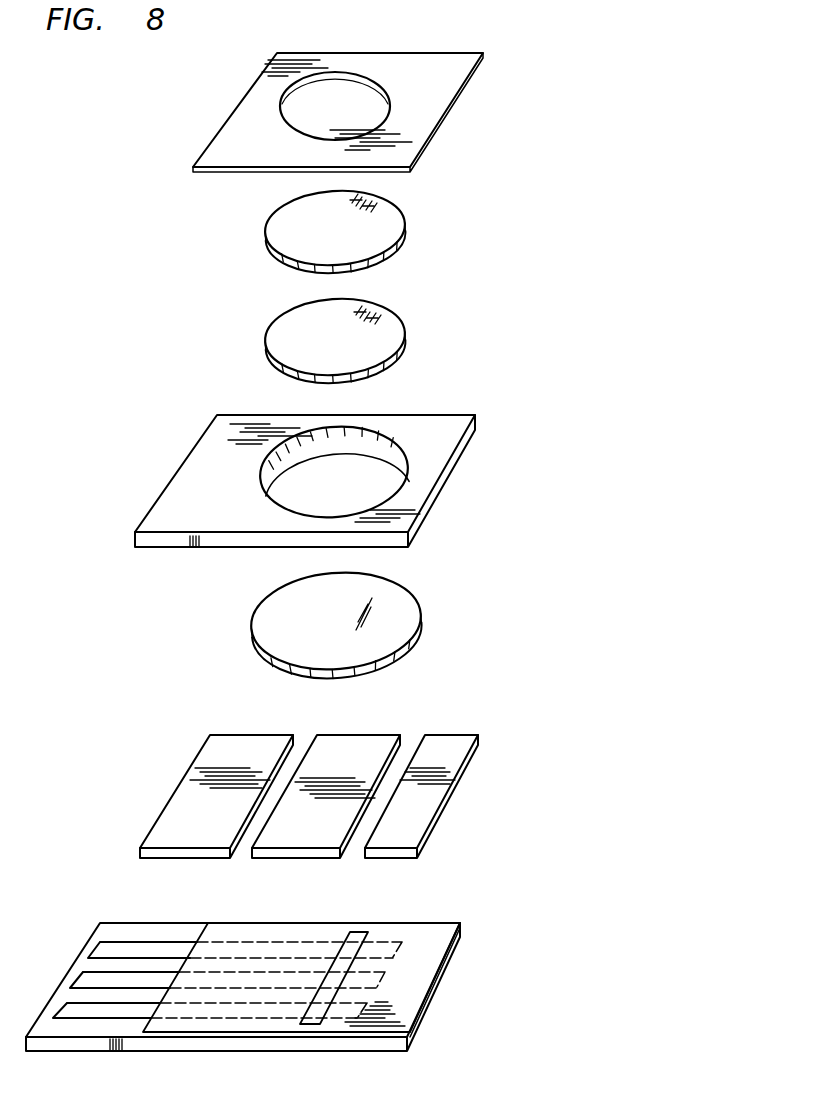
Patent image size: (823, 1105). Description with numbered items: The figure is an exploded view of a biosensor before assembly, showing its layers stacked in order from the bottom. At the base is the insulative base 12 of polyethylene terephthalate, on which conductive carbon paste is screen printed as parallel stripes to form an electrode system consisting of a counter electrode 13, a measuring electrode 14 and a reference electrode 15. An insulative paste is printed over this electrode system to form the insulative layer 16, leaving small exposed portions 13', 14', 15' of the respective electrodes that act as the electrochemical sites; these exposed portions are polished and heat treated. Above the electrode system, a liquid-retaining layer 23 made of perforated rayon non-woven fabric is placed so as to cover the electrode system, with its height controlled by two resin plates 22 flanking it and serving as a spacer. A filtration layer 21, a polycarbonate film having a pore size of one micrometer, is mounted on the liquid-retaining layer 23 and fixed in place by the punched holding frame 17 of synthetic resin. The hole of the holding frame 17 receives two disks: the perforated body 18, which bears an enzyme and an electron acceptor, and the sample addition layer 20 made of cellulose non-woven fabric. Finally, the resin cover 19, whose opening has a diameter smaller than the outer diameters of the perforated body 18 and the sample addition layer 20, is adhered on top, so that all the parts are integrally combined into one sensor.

The insulative base 12 is at (73, 1043).
The counter electrode 13 is at (202, 990).
The measuring electrode 14 is at (220, 960).
The reference electrode 15 is at (237, 927).
The exposed portion of counter electrode 13' is at (306, 1042).
The exposed portion of measuring electrode 14' is at (337, 939).
The exposed portion of reference electrode 15' is at (340, 949).
The insulative layer 16 is at (432, 934).
The holding frame 17 is at (195, 470).
The perforated body 18 is at (275, 343).
The resin cover 19 is at (243, 127).
The sample addition layer 20 is at (277, 233).
The filtration layer 21 is at (266, 622).
The resin plates 22 is at (207, 762).
The liquid-retaining layer 23 is at (378, 743).